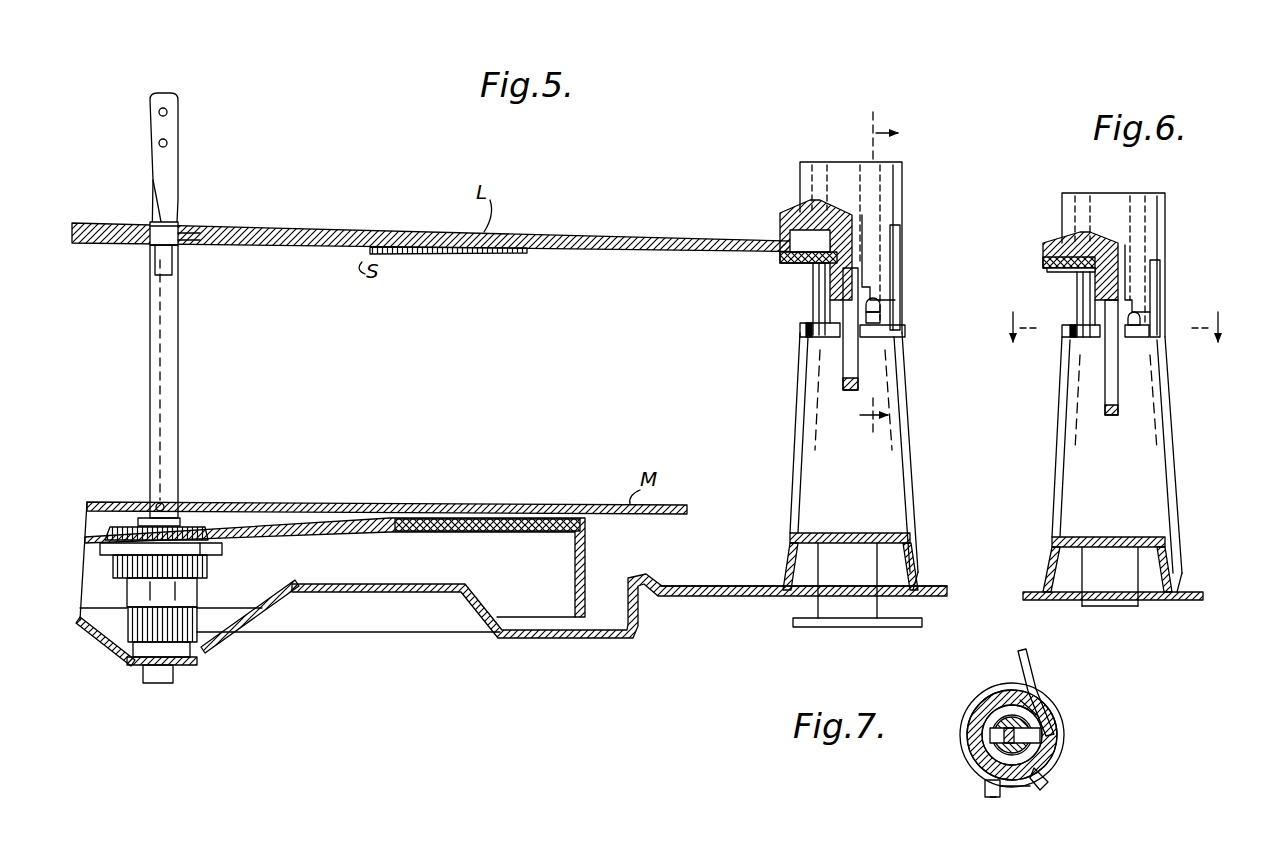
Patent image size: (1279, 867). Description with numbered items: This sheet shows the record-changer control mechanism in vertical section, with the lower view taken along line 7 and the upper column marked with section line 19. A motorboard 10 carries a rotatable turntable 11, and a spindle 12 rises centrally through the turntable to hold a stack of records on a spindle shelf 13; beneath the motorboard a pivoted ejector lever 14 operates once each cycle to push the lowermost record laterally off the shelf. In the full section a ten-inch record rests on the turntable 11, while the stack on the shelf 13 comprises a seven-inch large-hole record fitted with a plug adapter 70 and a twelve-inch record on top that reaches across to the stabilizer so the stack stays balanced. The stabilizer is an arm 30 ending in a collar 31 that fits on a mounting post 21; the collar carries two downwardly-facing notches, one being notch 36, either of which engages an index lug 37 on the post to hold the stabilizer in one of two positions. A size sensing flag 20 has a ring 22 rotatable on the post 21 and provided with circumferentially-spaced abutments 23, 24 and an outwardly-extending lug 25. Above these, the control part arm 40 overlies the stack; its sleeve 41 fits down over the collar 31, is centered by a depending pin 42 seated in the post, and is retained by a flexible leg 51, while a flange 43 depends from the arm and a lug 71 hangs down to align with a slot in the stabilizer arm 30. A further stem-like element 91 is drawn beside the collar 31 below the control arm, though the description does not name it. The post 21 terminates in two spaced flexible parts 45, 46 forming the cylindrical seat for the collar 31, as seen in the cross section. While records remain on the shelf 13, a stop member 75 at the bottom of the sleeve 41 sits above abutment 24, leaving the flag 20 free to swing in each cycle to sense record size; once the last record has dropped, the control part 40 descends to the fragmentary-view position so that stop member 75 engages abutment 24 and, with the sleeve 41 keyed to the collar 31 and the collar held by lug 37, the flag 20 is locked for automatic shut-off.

In FIG. 5, the motorboard 10 is at (713, 585).
In FIG. 6, the motorboard 10 is at (1193, 598).
In FIG. 5, the turntable 11 is at (588, 548).
In FIG. 5, the spindle 12 is at (172, 157).
In FIG. 5, the spindle shelf 13 is at (150, 228).
In FIG. 5, the pivoted lever 14 is at (180, 288).
In FIG. 5, the plug adapter 70 is at (205, 248).
In FIG. 5, the section line 19- 19 is at (855, 273).
In FIG. 6, the section line 7- 7 is at (1115, 329).
In FIG. 7, the size sensing flag 20 is at (1035, 680).
In FIG. 5, the post 21 is at (812, 470).
In FIG. 6, the post 21 is at (1066, 458).
In FIG. 7, the post 21 is at (986, 724).
In FIG. 5, the ring 22 is at (800, 330).
In FIG. 6, the ring 22 is at (1066, 337).
In FIG. 7, the ring 22 is at (962, 746).
In FIG. 5, the abutment 23 is at (822, 316).
In FIG. 6, the abutment 23 is at (1085, 325).
In FIG. 7, the abutment 23 is at (985, 780).
In FIG. 5, the abutment 24 is at (870, 336).
In FIG. 6, the abutment 24 is at (1140, 338).
In FIG. 7, the abutment 24 is at (1018, 788).
In FIG. 5, the lug 25 is at (822, 337).
In FIG. 6, the lug 25 is at (1082, 340).
In FIG. 7, the lug 25 is at (990, 792).
In FIG. 5, the arm 30 is at (800, 256).
In FIG. 6, the arm 30 is at (1043, 262).
In FIG. 7, the collar 31 is at (985, 730).
In FIG. 7, the notch 36 is at (1046, 742).
In FIG. 5, the lug 37 is at (882, 314).
In FIG. 5, the arm 40 is at (800, 208).
In FIG. 6, the arm 40 is at (1092, 240).
In FIG. 5, the sleeve 41 is at (902, 170).
In FIG. 6, the sleeve 41 is at (1150, 215).
In FIG. 7, the pin 42 is at (1010, 718).
In FIG. 5, the flange 43 is at (848, 375).
In FIG. 6, the flange 43 is at (1105, 404).
In FIG. 7, the upwardly-extending part 45 is at (1042, 734).
In FIG. 7, the upwardly-extending part 46 is at (1040, 716).
In FIG. 5, the leg 51 is at (900, 265).
In FIG. 6, the leg 51 is at (1160, 276).
In FIG. 5, the lug 71 is at (788, 238).
In FIG. 6, the lug 71 is at (1047, 271).
In FIG. 5, the stop member 75 is at (880, 300).
In FIG. 6, the stop member 75 is at (1142, 320).
In FIG. 7, the stop member 75 is at (1042, 772).
In FIG. 5, the stem 91 is at (812, 282).
In FIG. 6, the stem 91 is at (1077, 293).